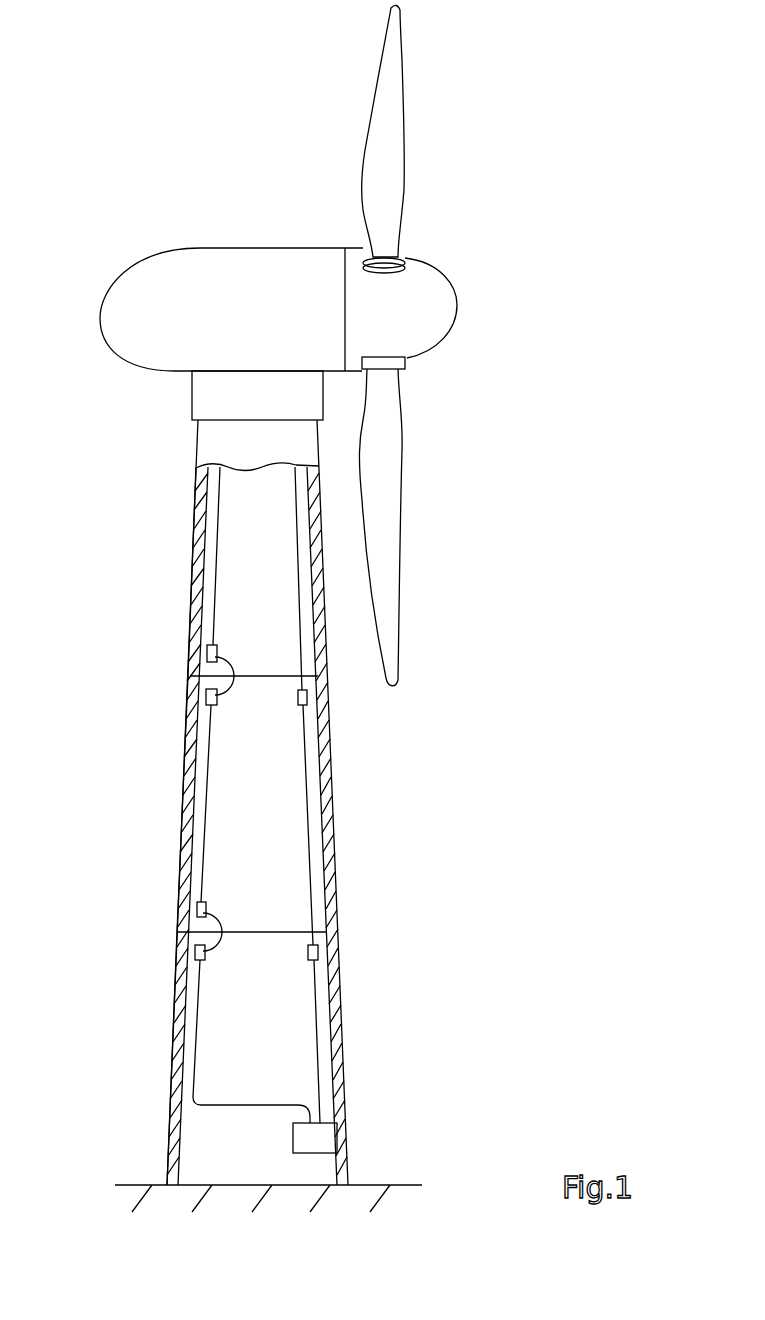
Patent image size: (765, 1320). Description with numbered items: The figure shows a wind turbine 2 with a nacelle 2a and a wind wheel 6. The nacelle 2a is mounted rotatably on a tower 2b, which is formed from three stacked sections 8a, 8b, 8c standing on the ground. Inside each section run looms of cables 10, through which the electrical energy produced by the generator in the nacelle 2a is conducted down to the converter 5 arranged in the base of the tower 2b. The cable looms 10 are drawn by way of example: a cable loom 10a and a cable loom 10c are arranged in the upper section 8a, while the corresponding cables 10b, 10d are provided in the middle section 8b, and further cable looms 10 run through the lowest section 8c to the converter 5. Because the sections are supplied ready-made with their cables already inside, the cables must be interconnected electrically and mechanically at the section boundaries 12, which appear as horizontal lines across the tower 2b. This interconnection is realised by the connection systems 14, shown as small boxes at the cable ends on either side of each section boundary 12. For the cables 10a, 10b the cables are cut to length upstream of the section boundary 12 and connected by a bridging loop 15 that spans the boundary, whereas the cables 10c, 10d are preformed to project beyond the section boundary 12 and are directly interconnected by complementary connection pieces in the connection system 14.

The wind turbine 2 is at (91, 175).
The nacelle 2a is at (240, 262).
The tower 2b is at (387, 867).
The wind wheel 6 is at (395, 102).
The section 8a is at (202, 520).
The section 8b is at (187, 815).
The section 8c is at (178, 1017).
The cable loom 10 is at (193, 1078).
The cable loom 10a is at (215, 559).
The cable 10b is at (203, 767).
The cable loom 10c is at (302, 653).
The cable 10d is at (308, 770).
The section boundary 12 is at (180, 676).
The connection system 14 is at (207, 652).
The cable loop 15 is at (228, 653).
The converter 5 is at (320, 1137).